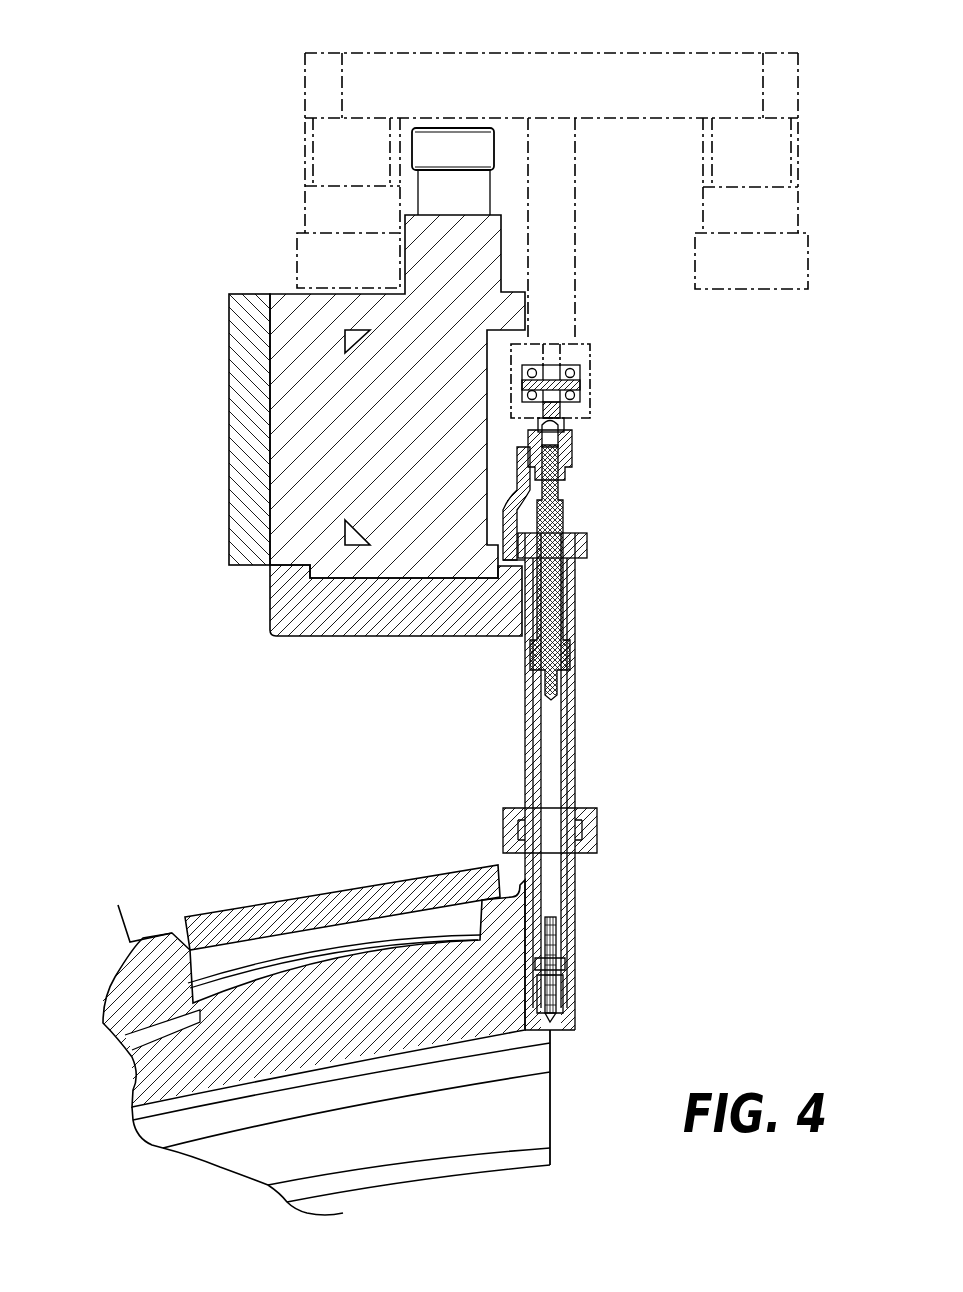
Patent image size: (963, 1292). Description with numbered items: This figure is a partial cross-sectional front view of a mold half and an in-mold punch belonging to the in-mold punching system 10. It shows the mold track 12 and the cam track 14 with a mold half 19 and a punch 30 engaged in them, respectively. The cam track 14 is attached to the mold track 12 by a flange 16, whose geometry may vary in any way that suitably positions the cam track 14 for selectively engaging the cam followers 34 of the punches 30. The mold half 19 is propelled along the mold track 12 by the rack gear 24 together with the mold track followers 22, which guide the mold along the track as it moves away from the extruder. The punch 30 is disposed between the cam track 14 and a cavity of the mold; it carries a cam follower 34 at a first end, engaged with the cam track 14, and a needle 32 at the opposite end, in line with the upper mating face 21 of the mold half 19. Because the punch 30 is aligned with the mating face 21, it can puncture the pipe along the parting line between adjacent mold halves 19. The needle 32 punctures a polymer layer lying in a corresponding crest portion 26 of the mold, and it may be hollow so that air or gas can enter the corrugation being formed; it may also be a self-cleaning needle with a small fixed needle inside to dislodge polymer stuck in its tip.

The in-mold punching system 10 is at (176, 192).
The mold track 12 is at (572, 90).
The cam track 14 is at (592, 362).
The flange 16 is at (560, 228).
The mold half 19 is at (435, 1123).
The upper mating face 21 is at (550, 1108).
The mold track followers 22 is at (453, 145).
The rack gear 24 is at (252, 448).
The crest portion 26 is at (383, 1042).
The punch 30 is at (573, 743).
The needle 32 is at (553, 990).
The cam follower 34 is at (577, 400).